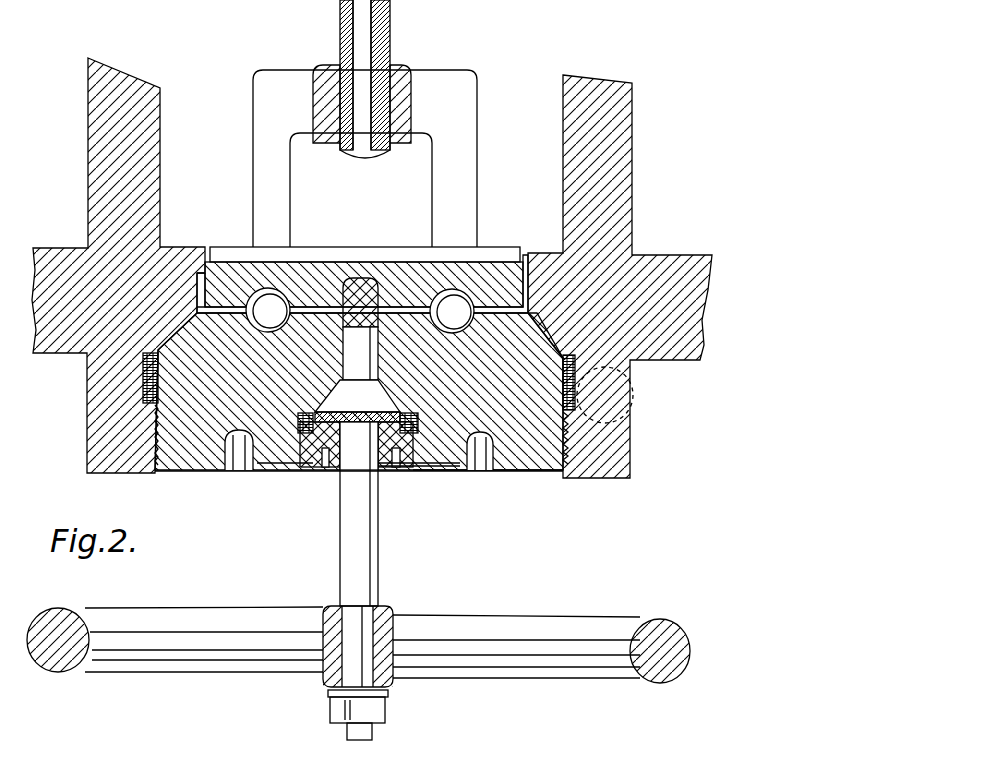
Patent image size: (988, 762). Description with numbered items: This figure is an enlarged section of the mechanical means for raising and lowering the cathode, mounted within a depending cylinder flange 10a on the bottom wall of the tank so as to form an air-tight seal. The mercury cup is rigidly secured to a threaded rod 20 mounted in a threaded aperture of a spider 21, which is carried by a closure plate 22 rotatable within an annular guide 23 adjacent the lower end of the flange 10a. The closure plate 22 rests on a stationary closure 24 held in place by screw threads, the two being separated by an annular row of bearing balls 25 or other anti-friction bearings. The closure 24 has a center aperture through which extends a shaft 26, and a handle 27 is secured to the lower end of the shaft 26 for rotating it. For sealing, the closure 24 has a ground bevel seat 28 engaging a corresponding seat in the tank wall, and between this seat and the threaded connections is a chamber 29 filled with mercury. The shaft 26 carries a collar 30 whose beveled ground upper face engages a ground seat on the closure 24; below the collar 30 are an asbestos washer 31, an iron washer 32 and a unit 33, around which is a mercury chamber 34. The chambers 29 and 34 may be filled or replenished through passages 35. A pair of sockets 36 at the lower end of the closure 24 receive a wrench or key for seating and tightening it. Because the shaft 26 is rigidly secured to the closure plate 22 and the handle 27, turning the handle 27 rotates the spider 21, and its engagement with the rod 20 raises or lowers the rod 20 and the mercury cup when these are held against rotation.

The depending cylinder flange 10a is at (627, 168).
The threaded rod 20 is at (388, 30).
The spider 21 is at (466, 108).
The closure plate 22 is at (364, 267).
The annular guide 23 is at (518, 250).
The stationary closure 24 is at (528, 440).
The bearing balls 25 is at (640, 430).
The shaft 26 is at (379, 505).
The handle 27 is at (667, 617).
The ground bevel seat 28 is at (553, 336).
The mercury chamber 29 is at (143, 378).
The collar 30 is at (435, 410).
The asbestos washer 31 is at (357, 424).
The iron washer 32 is at (358, 441).
The unit 33 is at (305, 472).
The mercury chamber 34 is at (523, 450).
The passages 35 is at (437, 472).
The sockets 36 is at (232, 472).